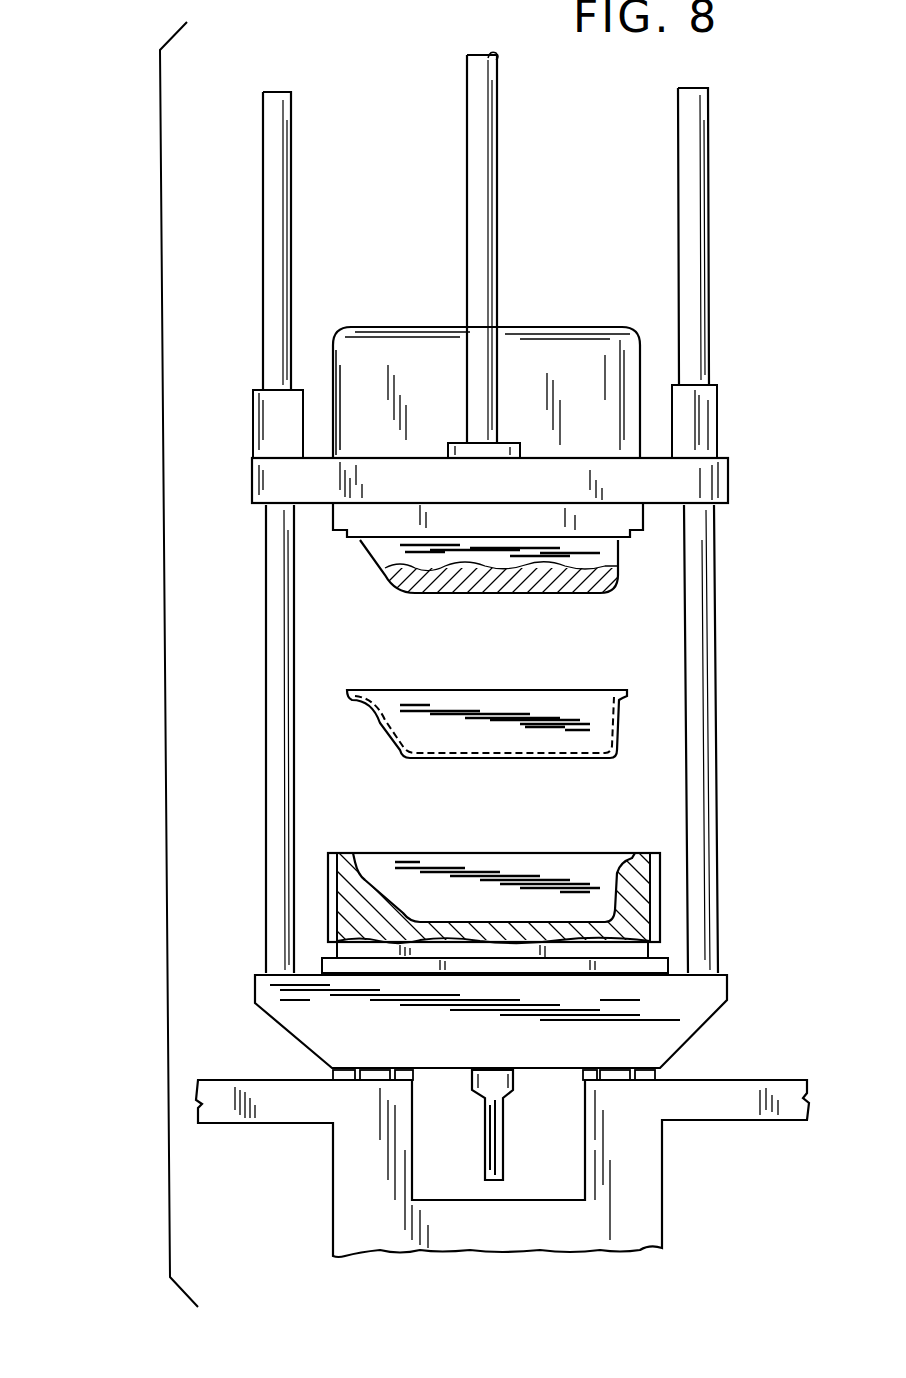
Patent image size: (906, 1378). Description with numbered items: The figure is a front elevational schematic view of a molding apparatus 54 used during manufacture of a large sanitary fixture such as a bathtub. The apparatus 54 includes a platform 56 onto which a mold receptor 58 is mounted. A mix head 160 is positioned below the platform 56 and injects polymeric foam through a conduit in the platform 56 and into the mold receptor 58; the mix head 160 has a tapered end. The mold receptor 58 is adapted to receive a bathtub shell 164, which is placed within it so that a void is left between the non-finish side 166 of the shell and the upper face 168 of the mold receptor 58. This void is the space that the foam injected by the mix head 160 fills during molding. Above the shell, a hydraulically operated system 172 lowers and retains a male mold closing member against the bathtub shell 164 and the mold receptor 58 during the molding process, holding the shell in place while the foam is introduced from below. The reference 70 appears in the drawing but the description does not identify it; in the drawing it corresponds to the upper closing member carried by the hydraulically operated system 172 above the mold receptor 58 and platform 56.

The molding apparatus 54 is at (163, 452).
The platform 56 is at (703, 1016).
The mold receptor 58 is at (483, 889).
The upper mold 70 is at (620, 563).
The mix head 160 is at (505, 1090).
The bathtub shell 164 is at (512, 747).
The non-finish side 166 is at (570, 760).
The upper face 168 is at (385, 855).
The hydraulically operated system 172 is at (730, 468).